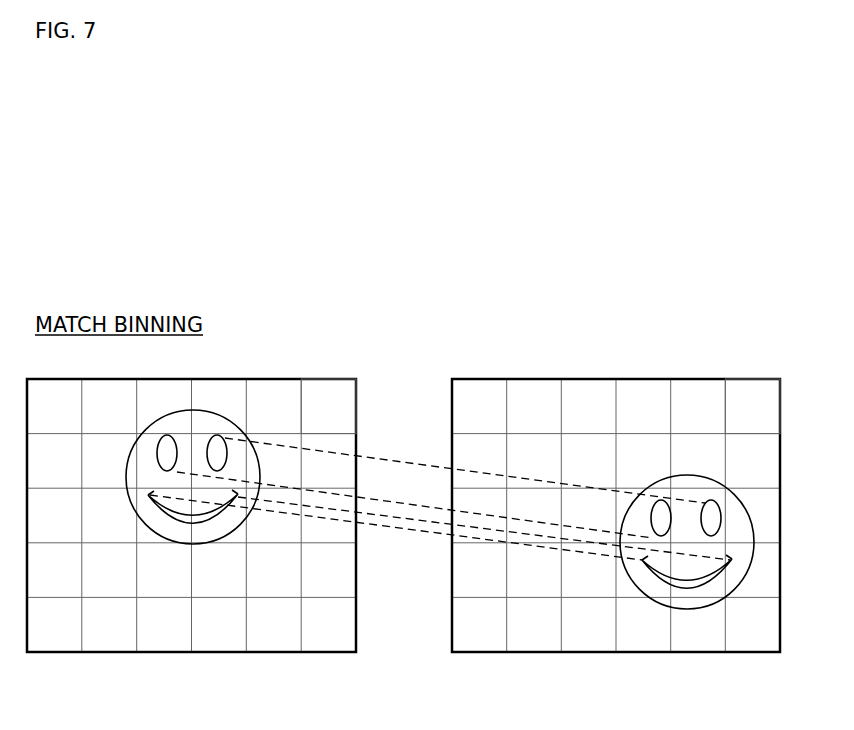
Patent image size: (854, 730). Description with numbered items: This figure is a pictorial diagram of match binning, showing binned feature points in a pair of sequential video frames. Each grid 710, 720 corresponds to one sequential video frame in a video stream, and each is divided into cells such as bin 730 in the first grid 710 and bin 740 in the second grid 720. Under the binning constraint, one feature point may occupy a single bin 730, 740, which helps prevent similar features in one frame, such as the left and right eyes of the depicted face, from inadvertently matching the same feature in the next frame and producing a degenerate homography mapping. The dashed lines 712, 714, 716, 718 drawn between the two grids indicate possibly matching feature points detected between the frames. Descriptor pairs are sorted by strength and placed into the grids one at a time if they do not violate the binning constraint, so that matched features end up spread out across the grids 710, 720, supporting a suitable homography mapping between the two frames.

The grid 710 is at (220, 379).
The grid 720 is at (600, 379).
The bin 730 is at (333, 413).
The bin 740 is at (745, 408).
The line 712 is at (382, 525).
The line 714 is at (407, 518).
The line 716 is at (383, 460).
The line 718 is at (431, 507).